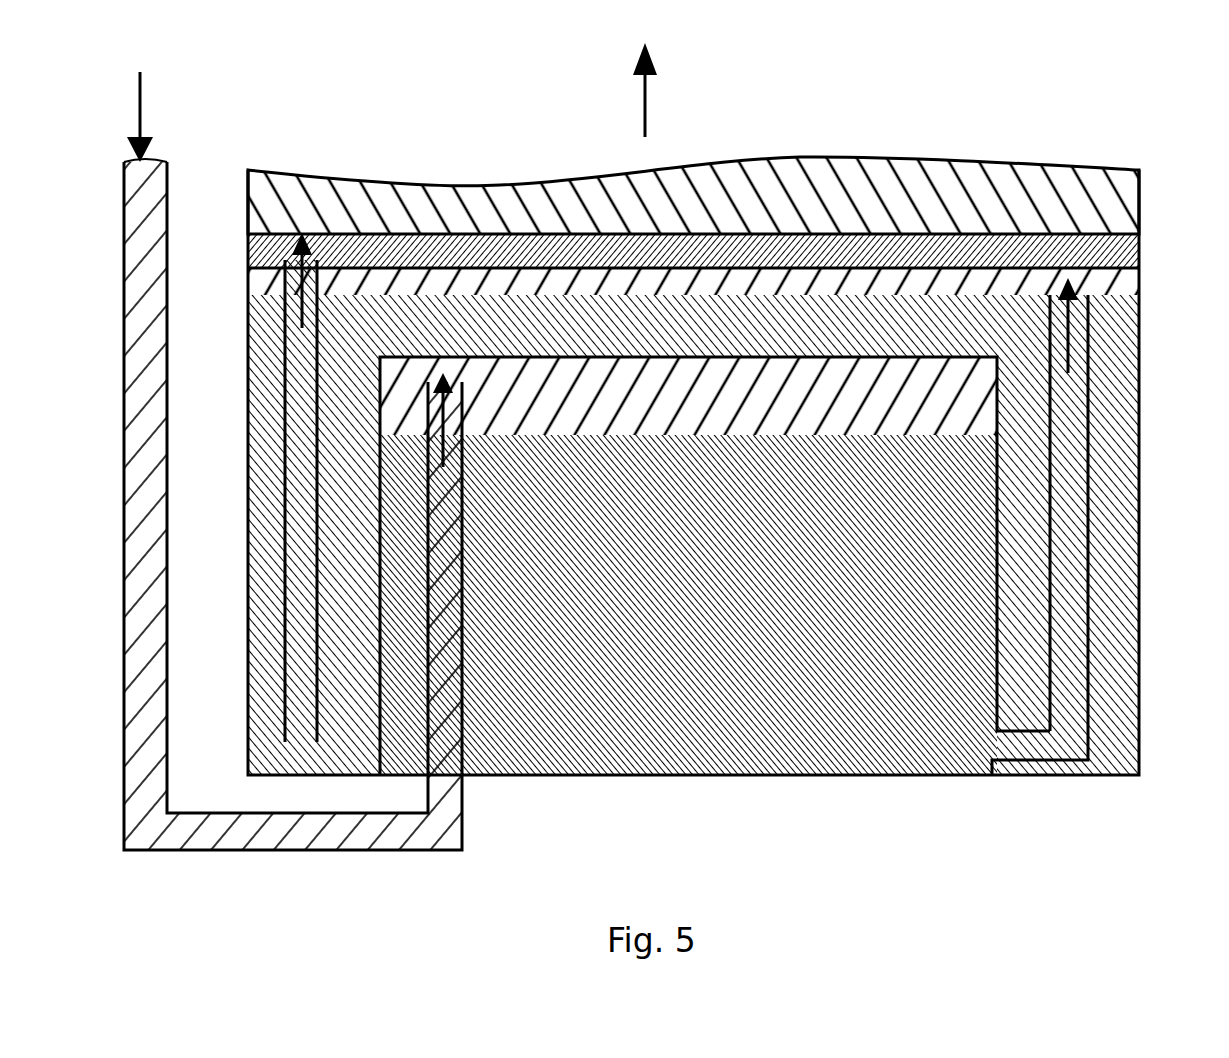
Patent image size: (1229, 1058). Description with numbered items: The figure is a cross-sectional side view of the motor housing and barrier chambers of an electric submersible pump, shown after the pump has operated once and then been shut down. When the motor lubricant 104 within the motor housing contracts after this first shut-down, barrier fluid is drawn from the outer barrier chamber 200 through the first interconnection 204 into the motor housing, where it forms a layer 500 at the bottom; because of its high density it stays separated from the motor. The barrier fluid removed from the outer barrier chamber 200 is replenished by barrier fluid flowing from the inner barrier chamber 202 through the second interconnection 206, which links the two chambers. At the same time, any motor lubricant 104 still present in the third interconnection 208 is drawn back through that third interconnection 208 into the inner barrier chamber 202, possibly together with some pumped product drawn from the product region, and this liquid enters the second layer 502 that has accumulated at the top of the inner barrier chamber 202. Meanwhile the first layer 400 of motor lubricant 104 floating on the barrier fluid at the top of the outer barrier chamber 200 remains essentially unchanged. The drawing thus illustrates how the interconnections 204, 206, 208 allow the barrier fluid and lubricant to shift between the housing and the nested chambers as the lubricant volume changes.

The motor lubricant 104 is at (800, 209).
The layer of barrier fluid 500 is at (898, 264).
The first layer of motor lubricant 400 is at (1130, 287).
The outer barrier chamber 200 is at (654, 337).
The inner barrier chamber 202 is at (679, 627).
The second layer of liquid 502 is at (818, 407).
The first interconnection 204 is at (320, 335).
The second interconnection 206 is at (1048, 326).
The third interconnection 208 is at (168, 522).